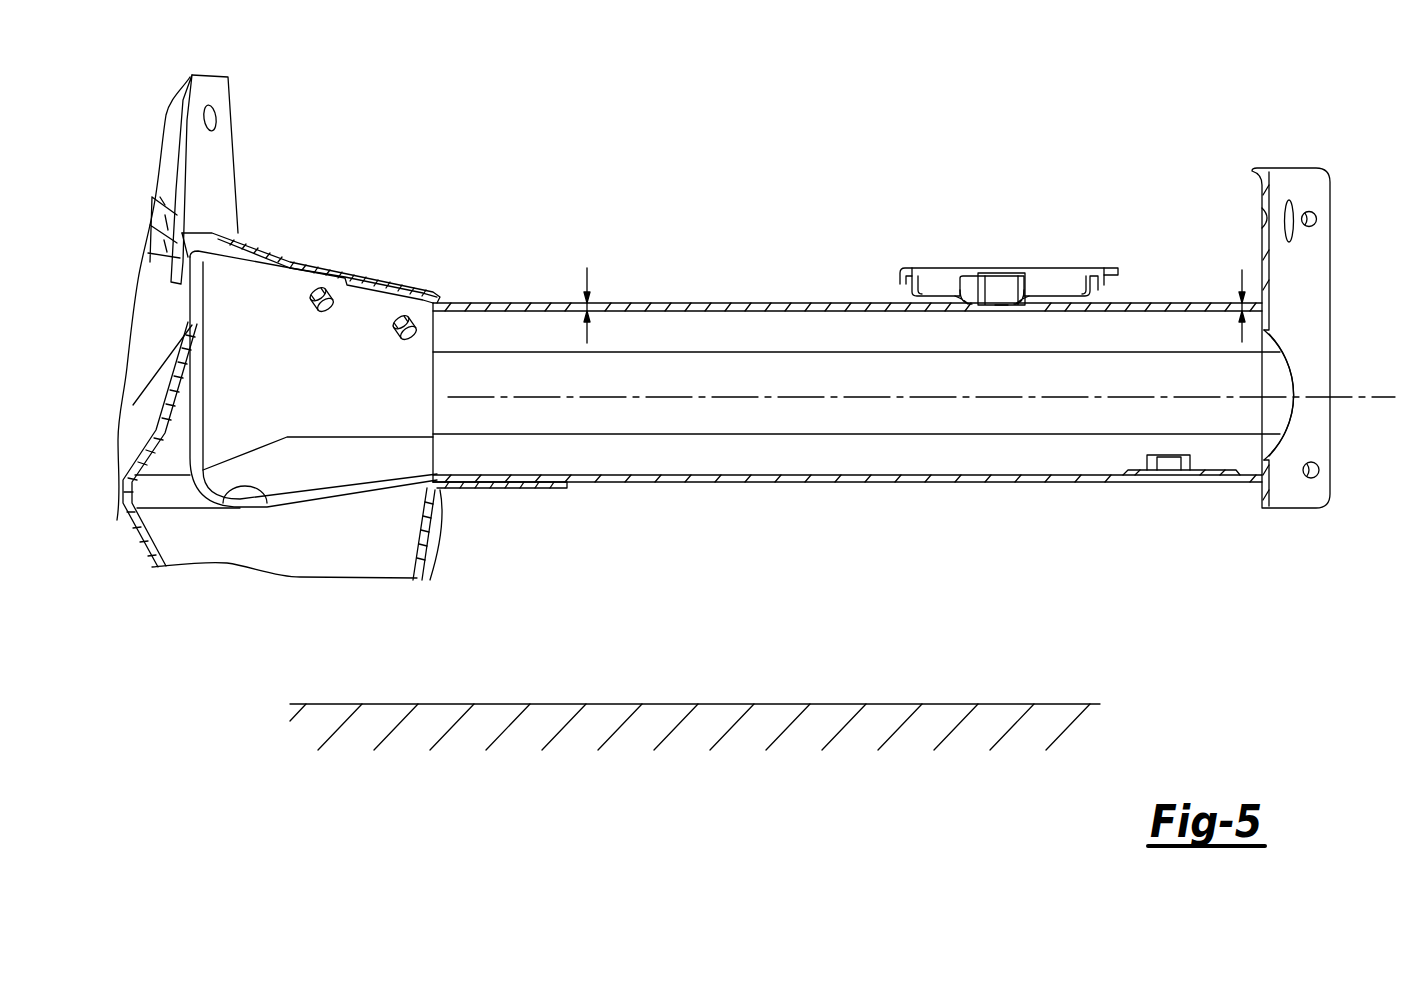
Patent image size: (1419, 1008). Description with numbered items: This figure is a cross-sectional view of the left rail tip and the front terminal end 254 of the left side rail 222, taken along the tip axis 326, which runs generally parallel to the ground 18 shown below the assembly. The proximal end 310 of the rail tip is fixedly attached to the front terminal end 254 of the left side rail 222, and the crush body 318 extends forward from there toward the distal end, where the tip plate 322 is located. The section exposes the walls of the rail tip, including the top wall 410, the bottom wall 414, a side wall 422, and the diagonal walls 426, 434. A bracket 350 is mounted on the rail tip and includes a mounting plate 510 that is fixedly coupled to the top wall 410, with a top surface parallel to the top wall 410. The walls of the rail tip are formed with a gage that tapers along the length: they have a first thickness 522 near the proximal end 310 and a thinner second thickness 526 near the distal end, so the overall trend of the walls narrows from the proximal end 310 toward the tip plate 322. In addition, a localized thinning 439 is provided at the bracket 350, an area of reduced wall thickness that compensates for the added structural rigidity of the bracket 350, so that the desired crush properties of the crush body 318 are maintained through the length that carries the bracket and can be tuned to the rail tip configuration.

The ground 18 is at (445, 704).
The left side rail 222 is at (312, 484).
The front terminal end 254 is at (563, 484).
The proximal end 310 is at (432, 375).
The crush body 318 is at (1100, 457).
The tip plate 322 is at (1317, 299).
The tip axis 326 is at (1374, 398).
The bracket 350 is at (946, 280).
The top wall 410 is at (697, 301).
The bottom wall 414 is at (720, 481).
The side wall 422 is at (747, 370).
The diagonal wall 426 is at (653, 323).
The diagonal wall 434 is at (805, 455).
The localized thinning 439 is at (1003, 310).
The mounting plate 510 is at (1060, 270).
The first thickness 522 is at (585, 268).
The second thickness 526 is at (1241, 270).